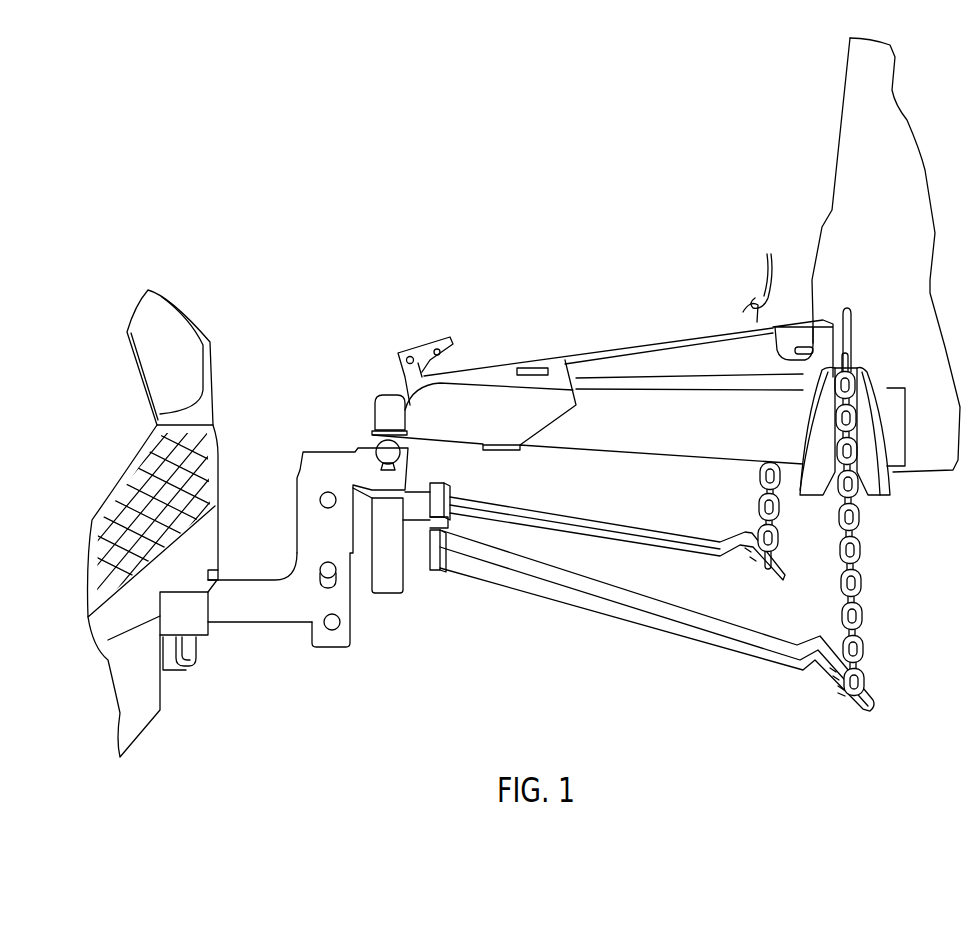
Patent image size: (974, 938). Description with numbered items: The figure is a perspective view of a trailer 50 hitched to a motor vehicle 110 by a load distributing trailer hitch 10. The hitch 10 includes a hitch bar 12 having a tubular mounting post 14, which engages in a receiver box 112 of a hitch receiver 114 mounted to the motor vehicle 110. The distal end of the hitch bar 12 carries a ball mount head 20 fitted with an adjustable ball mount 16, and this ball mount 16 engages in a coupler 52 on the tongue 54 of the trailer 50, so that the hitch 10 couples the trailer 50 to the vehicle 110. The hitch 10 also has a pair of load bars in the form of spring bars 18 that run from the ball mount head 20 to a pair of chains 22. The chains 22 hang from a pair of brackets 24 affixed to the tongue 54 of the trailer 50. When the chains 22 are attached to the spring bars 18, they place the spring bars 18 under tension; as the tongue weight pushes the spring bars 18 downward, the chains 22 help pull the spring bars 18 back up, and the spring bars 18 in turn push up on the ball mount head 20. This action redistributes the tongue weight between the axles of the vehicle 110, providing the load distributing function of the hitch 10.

The load distributing trailer hitch 10 is at (374, 664).
The hitch bar 12 is at (308, 612).
The tubular mounting post 14 is at (240, 623).
The adjustable ball mount 16 is at (377, 445).
The spring bars 18 is at (620, 588).
The ball mount head 20 is at (380, 587).
The chains 22 is at (760, 497).
The brackets 24 is at (800, 378).
The trailer 50 is at (840, 117).
The coupler 52 is at (378, 395).
The tongue 54 is at (512, 364).
The motor vehicle 110 is at (192, 323).
The receiver box 112 is at (192, 617).
The hitch receiver 114 is at (167, 650).